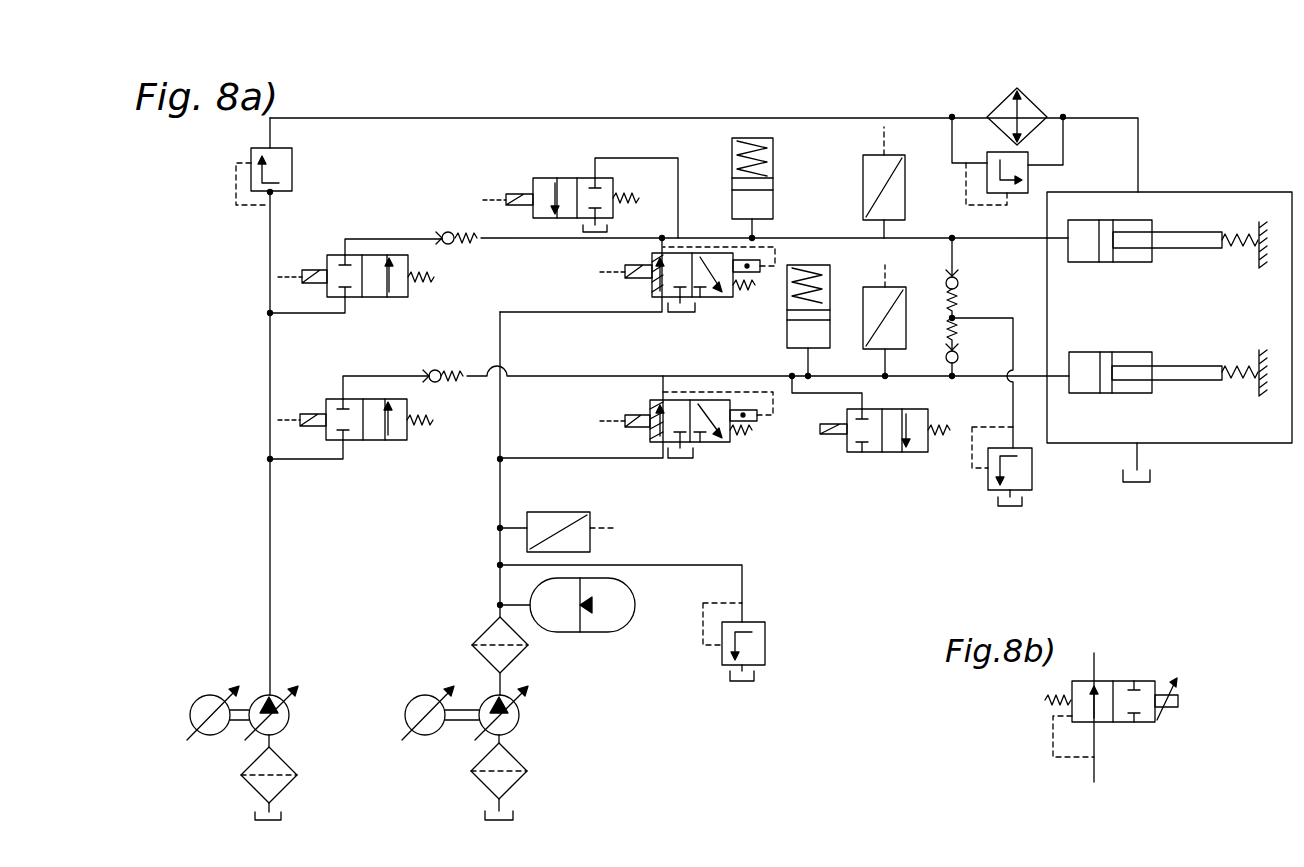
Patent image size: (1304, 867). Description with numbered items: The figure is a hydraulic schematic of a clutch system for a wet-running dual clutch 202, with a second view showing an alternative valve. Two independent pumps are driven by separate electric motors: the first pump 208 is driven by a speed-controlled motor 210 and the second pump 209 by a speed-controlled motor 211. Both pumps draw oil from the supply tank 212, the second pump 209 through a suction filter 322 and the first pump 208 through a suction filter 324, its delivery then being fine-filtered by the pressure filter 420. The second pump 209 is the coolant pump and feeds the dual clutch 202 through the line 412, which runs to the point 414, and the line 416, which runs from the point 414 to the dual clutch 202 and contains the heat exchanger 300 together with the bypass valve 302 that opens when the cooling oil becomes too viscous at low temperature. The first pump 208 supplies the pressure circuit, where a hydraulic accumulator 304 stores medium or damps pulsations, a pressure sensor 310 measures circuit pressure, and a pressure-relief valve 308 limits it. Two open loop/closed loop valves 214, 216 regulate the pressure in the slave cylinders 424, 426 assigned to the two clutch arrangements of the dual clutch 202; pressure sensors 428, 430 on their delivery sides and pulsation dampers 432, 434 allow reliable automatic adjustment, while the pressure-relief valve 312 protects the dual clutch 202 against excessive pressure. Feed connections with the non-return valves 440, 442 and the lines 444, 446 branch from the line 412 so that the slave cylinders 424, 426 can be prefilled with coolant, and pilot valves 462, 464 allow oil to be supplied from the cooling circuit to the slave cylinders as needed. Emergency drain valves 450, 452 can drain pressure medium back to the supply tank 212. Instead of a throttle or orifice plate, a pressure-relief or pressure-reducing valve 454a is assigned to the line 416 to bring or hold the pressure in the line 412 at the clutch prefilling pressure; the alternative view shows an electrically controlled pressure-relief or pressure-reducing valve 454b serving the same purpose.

In FIG. 8A, the dual clutch 202 is at (1207, 152).
In FIG. 8A, the first pump 208 is at (519, 718).
In FIG. 8A, the second pump 209 is at (289, 718).
In FIG. 8A, the electric motor 210 is at (418, 698).
In FIG. 8A, the electric motor 211 is at (207, 700).
In FIG. 8A, the supply tank 212 is at (605, 232).
In FIG. 8A, the valve 214 is at (650, 291).
In FIG. 8A, the valve 216 is at (727, 438).
In FIG. 8A, the heat exchanger 300 is at (1025, 104).
In FIG. 8A, the bypass valve 302 is at (1010, 170).
In FIG. 8A, the hydraulic accumulator 304 is at (602, 622).
In FIG. 8A, the pressure-relief valve 308 is at (757, 640).
In FIG. 8A, the pressure sensor 310 is at (560, 522).
In FIG. 8A, the pressure-relief valve 312 is at (1017, 468).
In FIG. 8A, the suction filter 322 is at (285, 783).
In FIG. 8A, the suction filter 324 is at (520, 786).
In FIG. 8A, the line 412 is at (268, 357).
In FIG. 8B, the line 412 is at (1094, 775).
In FIG. 8A, the point 414 is at (271, 193).
In FIG. 8B, the point 414 is at (1096, 723).
In FIG. 8A, the line 416 is at (517, 117).
In FIG. 8A, the pressure filter 420 is at (490, 640).
In FIG. 8A, the slave cylinder 424 is at (1080, 366).
In FIG. 8A, the slave cylinder 426 is at (1088, 252).
In FIG. 8A, the pressure sensor 428 is at (873, 296).
In FIG. 8A, the pressure sensor 430 is at (870, 193).
In FIG. 8A, the pulsation damper 432 is at (787, 336).
In FIG. 8A, the pulsation damper 434 is at (738, 170).
In FIG. 8A, the non-return valve 440 is at (447, 234).
In FIG. 8A, the non-return valve 442 is at (437, 371).
In FIG. 8A, the line 444 is at (317, 313).
In FIG. 8A, the line 446 is at (317, 460).
In FIG. 8A, the emergency drain valve 450 is at (543, 188).
In FIG. 8A, the emergency drain valve 452 is at (878, 448).
In FIG. 8A, the pressure-relief valve or pressure-reducing valve 454a is at (280, 160).
In FIG. 8B, the electrically controlled pressure-relief valve or pressure-reducing valve 454b is at (1103, 690).
In FIG. 8A, the pilot valve 462 is at (397, 300).
In FIG. 8A, the pilot valve 464 is at (393, 432).